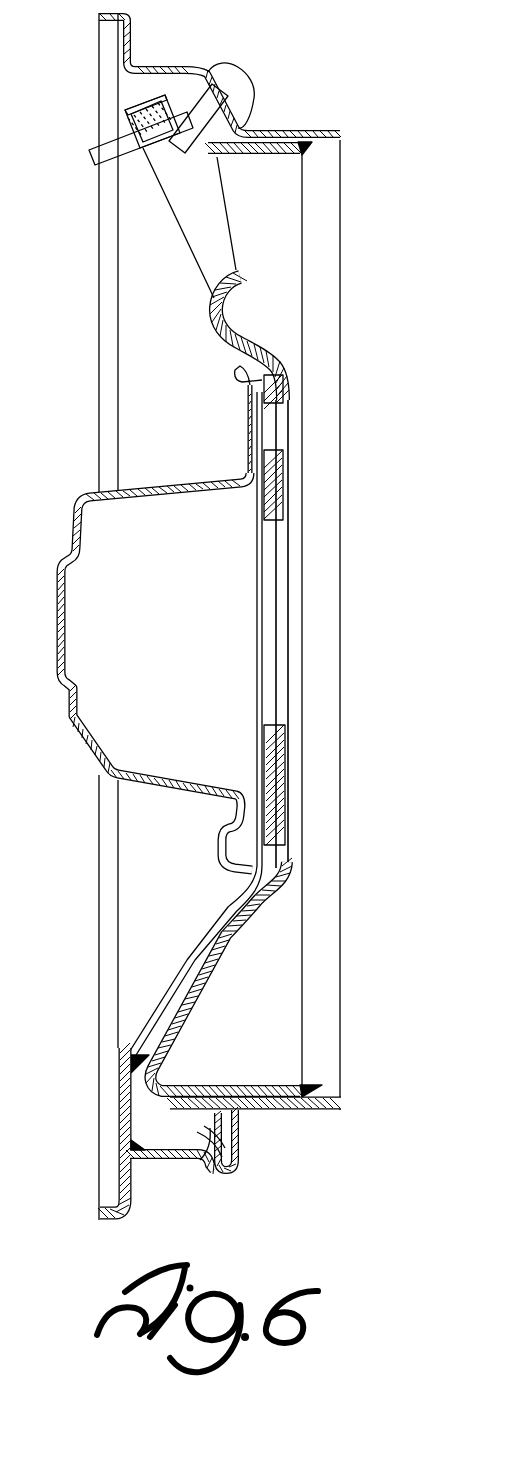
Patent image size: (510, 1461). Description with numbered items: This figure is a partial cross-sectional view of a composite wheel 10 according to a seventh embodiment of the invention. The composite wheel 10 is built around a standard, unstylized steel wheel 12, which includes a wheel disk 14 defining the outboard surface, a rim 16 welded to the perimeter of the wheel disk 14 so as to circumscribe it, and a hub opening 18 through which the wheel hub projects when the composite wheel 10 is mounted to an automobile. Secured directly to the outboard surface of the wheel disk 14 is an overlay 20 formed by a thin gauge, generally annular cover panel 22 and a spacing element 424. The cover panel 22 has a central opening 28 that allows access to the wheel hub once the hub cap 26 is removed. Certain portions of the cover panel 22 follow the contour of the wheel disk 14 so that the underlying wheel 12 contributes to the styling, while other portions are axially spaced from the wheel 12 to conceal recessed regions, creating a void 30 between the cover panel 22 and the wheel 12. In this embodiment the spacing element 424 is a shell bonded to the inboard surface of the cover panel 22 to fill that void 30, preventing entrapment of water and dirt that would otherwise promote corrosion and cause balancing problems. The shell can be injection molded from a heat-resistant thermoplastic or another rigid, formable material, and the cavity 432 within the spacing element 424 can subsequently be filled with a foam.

The composite wheel 10 is at (76, 176).
The wheel 12 is at (340, 782).
The wheel disk 14 is at (288, 868).
The rim 16 is at (135, 50).
The hub opening 18 is at (270, 518).
The overlay 20 is at (185, 970).
The cover panel 22 is at (218, 920).
The hub cap 26 is at (78, 500).
The central opening 28 is at (278, 842).
The void 30 is at (169, 1158).
The spacing element 424 is at (228, 1130).
The cavity 432 is at (216, 1163).